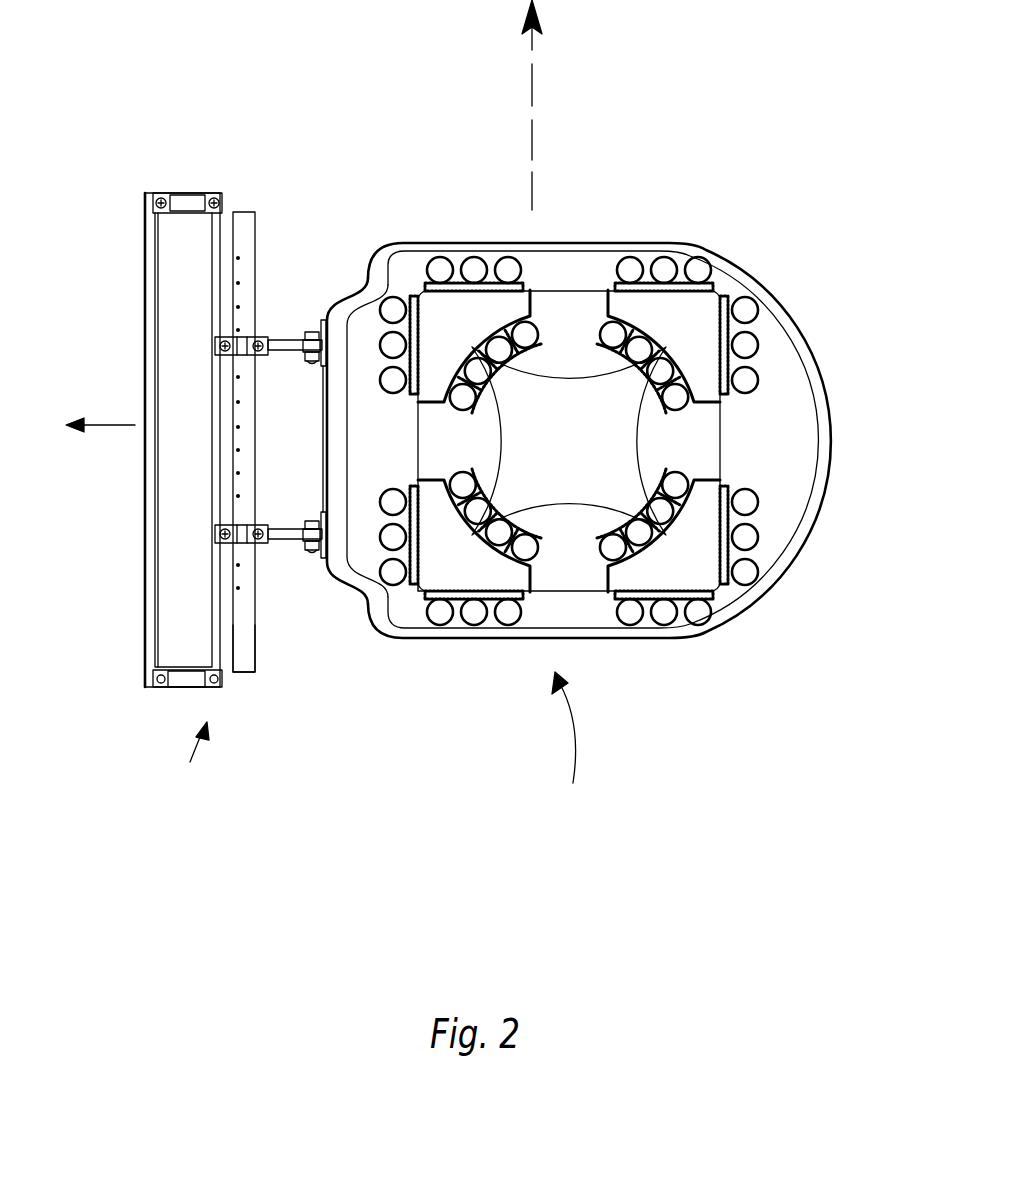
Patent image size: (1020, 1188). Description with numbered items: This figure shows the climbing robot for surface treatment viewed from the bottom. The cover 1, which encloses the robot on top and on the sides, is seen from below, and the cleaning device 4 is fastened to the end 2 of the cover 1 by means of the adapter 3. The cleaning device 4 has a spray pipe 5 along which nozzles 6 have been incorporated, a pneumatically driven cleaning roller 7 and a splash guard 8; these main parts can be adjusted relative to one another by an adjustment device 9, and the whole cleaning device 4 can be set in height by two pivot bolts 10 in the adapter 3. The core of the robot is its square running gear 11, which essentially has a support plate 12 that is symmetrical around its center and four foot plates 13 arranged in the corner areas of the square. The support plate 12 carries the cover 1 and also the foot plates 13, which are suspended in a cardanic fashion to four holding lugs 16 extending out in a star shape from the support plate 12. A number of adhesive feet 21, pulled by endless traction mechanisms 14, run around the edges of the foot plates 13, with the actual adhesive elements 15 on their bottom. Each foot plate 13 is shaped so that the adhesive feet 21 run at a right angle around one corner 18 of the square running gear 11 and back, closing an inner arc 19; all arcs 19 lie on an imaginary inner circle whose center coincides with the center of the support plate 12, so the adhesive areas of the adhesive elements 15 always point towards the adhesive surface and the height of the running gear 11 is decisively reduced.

The cover 1 is at (795, 431).
The end of the cover 2 is at (339, 350).
The adapter 3 is at (326, 436).
The cleaning device 4 is at (190, 824).
The spray pipe 5 is at (245, 652).
The nozzles 6 is at (243, 232).
The cleaning roller 7 is at (189, 236).
The splash guard 8 is at (147, 212).
The adjustment device 9 is at (282, 537).
The pivot bolts 10 is at (313, 328).
The square running gear 11 is at (582, 849).
The support plate 12 is at (569, 441).
The foot plates 13 is at (673, 327).
The endless traction mechanisms 14 is at (530, 300).
The adhesive elements 15 is at (476, 270).
The holding lugs 16 is at (636, 502).
The corner 18 is at (723, 597).
The inner arc 19 is at (653, 537).
The adhesive feet 21 is at (728, 302).